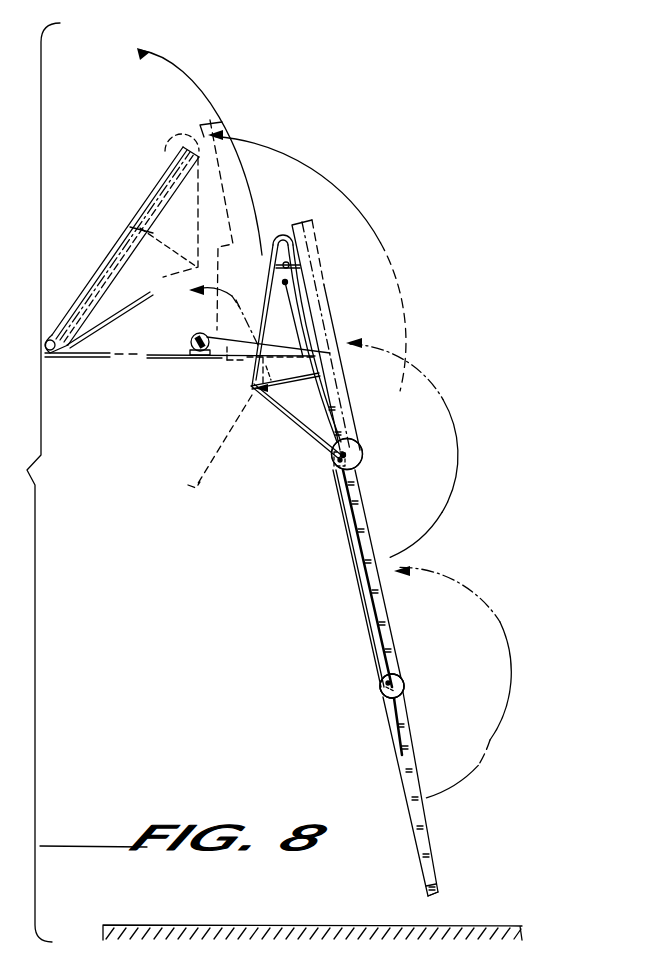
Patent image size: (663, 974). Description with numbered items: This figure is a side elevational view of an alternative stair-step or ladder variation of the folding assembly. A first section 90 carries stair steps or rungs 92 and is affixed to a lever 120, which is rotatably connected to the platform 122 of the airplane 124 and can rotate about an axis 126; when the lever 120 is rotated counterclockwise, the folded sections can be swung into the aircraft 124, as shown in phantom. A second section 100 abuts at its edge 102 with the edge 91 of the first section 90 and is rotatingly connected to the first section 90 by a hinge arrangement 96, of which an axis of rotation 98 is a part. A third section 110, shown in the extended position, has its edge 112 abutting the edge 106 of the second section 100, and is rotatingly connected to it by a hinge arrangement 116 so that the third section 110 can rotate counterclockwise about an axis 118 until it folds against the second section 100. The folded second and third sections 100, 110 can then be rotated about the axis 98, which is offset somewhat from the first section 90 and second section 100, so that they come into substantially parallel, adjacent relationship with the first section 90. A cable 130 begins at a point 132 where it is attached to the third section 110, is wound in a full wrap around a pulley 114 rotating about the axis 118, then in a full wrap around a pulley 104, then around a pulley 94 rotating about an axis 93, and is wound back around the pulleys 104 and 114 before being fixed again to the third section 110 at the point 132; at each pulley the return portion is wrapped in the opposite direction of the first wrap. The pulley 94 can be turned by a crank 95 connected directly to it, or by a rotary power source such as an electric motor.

The first section 90 is at (300, 413).
The edge of first section 91 is at (336, 461).
The stair steps or rungs 92 is at (312, 387).
The axis 93 is at (284, 234).
The pulley 94 is at (289, 264).
The crank 95 is at (150, 268).
The hinge arrangement 96 is at (378, 456).
The axis of rotation 98 is at (362, 468).
The second section 100 is at (366, 606).
The edge of second section 102 is at (333, 463).
The pulley 104 is at (360, 441).
The edge of second section 106 is at (384, 683).
The third section 110 is at (437, 892).
The edge of third section 112 is at (381, 689).
The pulley 114 is at (399, 677).
The hinge arrangement 116 is at (420, 700).
The axis 118 is at (404, 683).
The lever 120 is at (222, 360).
The platform 122 is at (100, 356).
The airplane 124 is at (185, 78).
The axis 126 is at (190, 350).
The cable 130 is at (347, 407).
The point 132 is at (403, 755).